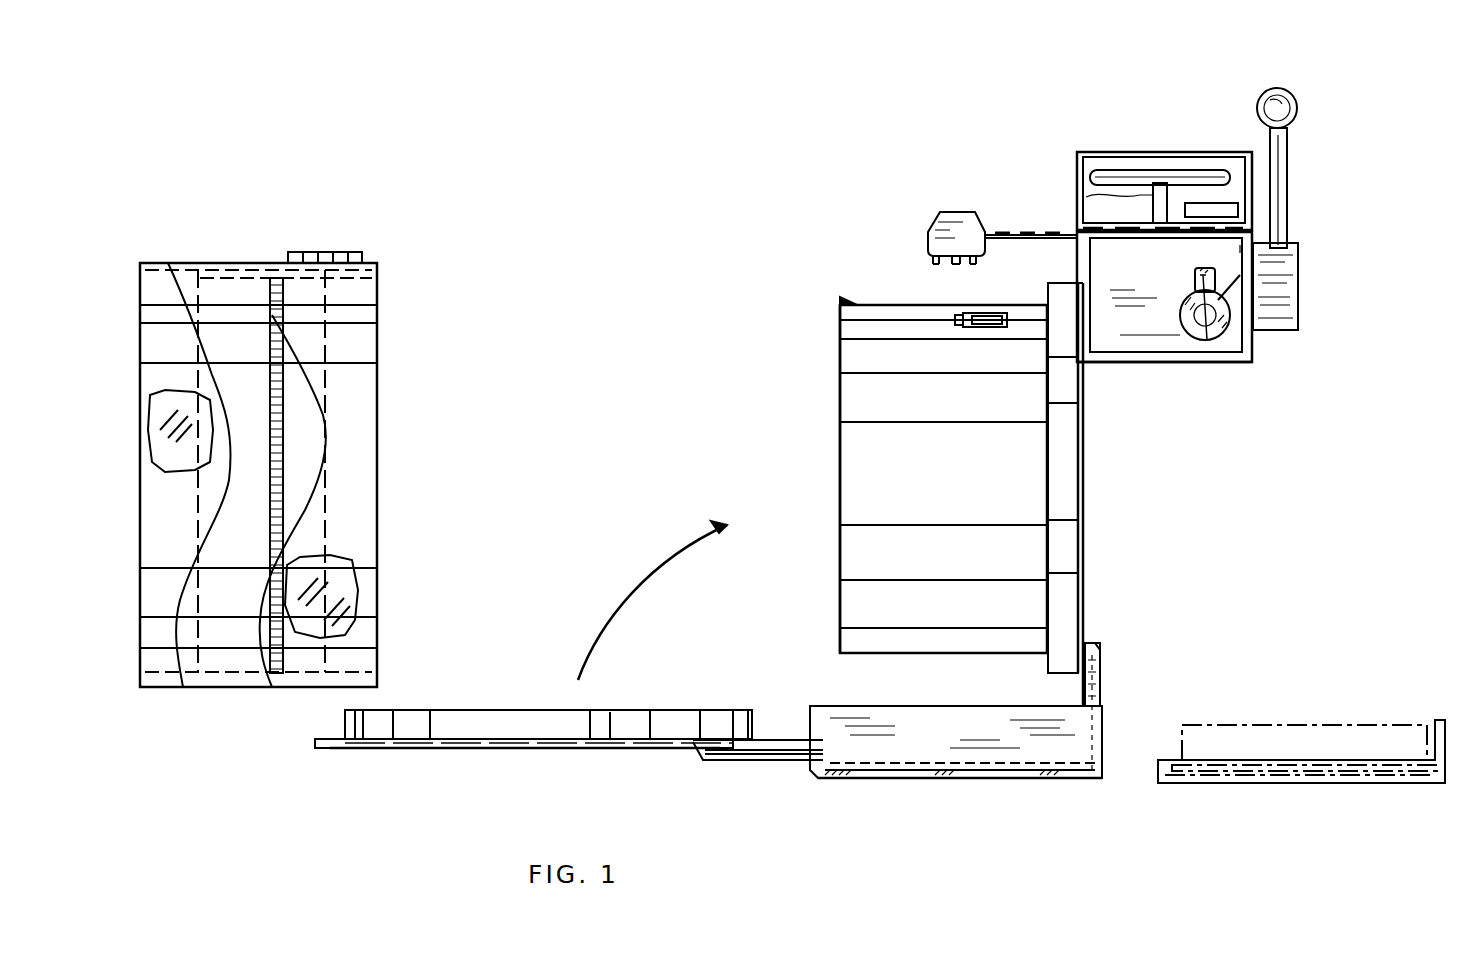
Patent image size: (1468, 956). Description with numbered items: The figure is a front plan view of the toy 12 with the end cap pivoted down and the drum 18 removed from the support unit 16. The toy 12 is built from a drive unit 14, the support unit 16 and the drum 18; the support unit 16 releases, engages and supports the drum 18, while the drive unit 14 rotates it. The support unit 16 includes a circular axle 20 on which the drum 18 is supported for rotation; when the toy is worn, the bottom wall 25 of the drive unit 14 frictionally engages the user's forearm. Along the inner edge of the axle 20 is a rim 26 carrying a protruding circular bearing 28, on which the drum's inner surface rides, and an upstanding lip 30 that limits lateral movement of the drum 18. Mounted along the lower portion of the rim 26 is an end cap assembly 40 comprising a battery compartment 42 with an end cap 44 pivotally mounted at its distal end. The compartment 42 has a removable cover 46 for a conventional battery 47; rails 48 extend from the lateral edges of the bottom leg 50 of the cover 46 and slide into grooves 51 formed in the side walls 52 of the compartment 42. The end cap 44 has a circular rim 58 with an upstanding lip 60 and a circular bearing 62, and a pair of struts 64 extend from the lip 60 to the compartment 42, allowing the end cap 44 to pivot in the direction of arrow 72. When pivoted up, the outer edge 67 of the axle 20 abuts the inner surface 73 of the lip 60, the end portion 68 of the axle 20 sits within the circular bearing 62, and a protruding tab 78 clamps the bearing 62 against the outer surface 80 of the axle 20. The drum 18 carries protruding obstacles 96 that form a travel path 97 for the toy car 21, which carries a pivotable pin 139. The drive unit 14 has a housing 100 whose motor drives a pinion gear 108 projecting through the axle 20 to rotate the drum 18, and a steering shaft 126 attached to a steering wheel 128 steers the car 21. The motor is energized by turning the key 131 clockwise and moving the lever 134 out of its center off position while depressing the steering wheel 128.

The toy 12 is at (1188, 101).
The drive unit 14 is at (1258, 350).
The support unit 16 is at (1090, 571).
The drum 18 is at (402, 577).
The circular axle 20 is at (885, 553).
The toy car 21 is at (957, 212).
The bottom wall 25 is at (1160, 366).
The rim 26 is at (1097, 528).
The circular bearing 28 is at (1068, 470).
The upstanding lip 30 is at (1083, 403).
The end cap assembly 40 is at (968, 778).
The battery compartment 42 is at (1060, 742).
The end cap 44 is at (621, 752).
The removable cover 46 is at (1055, 780).
The battery 47 is at (1295, 742).
The rails 48 is at (1220, 771).
The bottom leg 50 is at (1335, 778).
The grooves 51 is at (892, 772).
The side walls 52 is at (855, 748).
The circular rim 58 is at (430, 750).
The upstanding lip 60 is at (457, 750).
The circular bearing 62 is at (455, 722).
The struts 64 is at (753, 748).
The outer edge 67 is at (840, 400).
The end portion 68 is at (862, 476).
The arrow 72 is at (655, 572).
The inner surface 73 is at (612, 735).
The protruding tab 78 is at (855, 298).
The outer surface 80 is at (970, 481).
The obstacles 96 is at (293, 252).
The travel path 97 is at (330, 440).
The housing 100 is at (1178, 360).
The pinion gear 108 is at (985, 327).
The steering shaft 126 is at (1153, 200).
The steering wheel 128 is at (1148, 172).
The key 131 is at (1298, 268).
The lever 134 is at (1290, 158).
The pin 139 is at (957, 262).